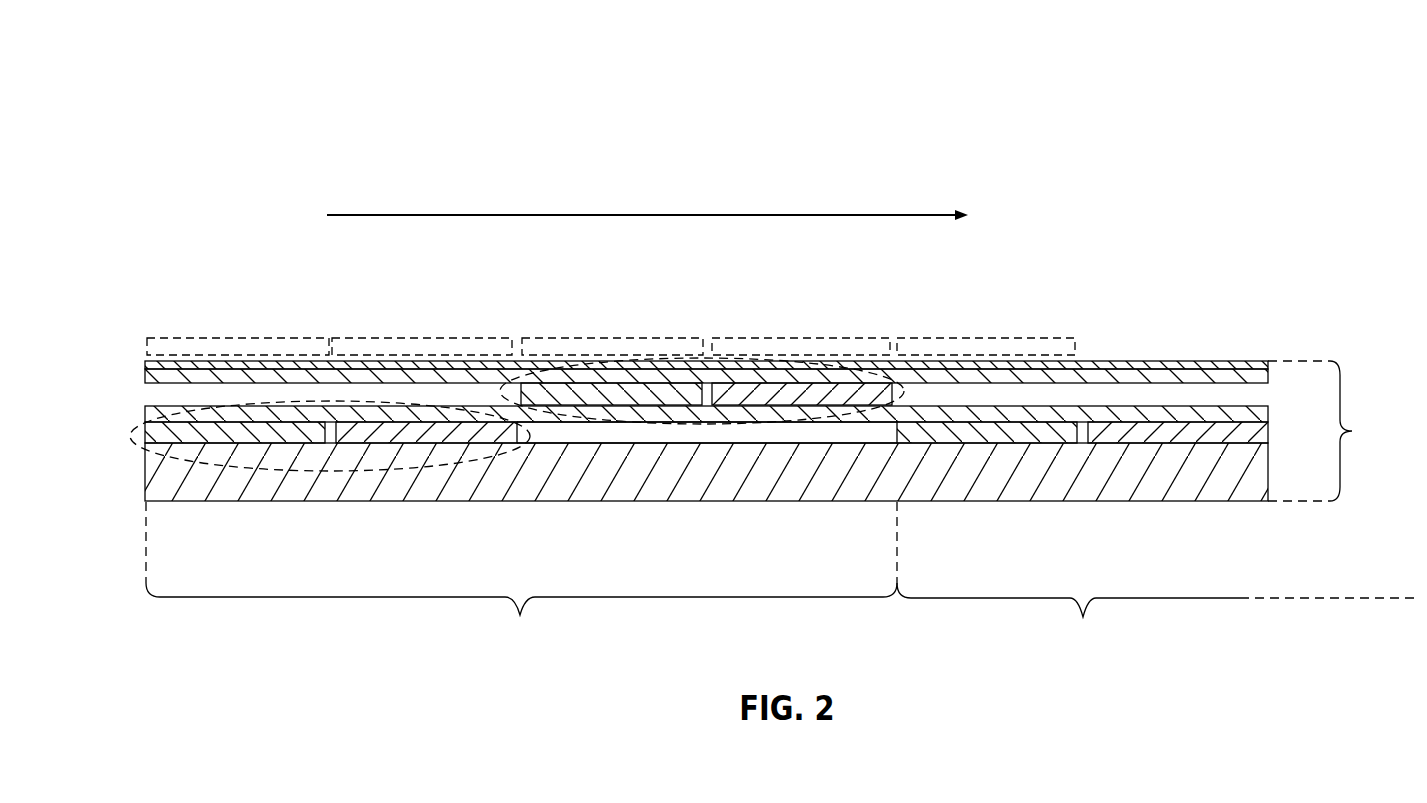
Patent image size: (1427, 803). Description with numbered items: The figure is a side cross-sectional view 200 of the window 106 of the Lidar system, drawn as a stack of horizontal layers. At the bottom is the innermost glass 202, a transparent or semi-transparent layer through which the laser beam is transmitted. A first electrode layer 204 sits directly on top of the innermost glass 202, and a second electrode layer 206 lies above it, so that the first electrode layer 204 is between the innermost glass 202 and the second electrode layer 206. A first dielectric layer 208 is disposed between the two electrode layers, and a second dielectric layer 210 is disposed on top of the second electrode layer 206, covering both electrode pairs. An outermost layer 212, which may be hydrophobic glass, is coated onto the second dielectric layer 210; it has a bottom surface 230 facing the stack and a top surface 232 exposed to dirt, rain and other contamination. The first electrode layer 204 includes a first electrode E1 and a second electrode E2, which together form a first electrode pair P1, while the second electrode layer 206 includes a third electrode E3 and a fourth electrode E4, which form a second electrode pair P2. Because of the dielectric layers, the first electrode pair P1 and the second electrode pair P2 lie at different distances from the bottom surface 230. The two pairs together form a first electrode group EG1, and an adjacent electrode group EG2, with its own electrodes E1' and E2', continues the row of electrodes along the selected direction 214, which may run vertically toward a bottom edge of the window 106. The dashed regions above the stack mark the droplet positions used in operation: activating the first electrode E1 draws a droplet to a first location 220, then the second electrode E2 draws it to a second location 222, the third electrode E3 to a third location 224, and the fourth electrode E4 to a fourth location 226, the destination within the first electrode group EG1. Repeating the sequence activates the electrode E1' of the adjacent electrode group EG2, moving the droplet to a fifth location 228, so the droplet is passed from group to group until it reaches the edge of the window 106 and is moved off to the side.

The side cross-sectional view 200 is at (358, 80).
The window 106 is at (1352, 431).
The innermost glass 202 is at (146, 490).
The first electrode layer 204 is at (146, 434).
The second electrode layer 206 is at (1253, 396).
The first dielectric layer 208 is at (146, 414).
The second dielectric layer 210 is at (146, 378).
The outermost layer 212 is at (147, 365).
The selected direction 214 is at (393, 214).
The first location 220 is at (238, 333).
The second location 222 is at (418, 333).
The third location 224 is at (618, 333).
The fourth location 226 is at (808, 333).
The fifth location 228 is at (996, 333).
The bottom surface 230 is at (1230, 371).
The top surface 232 is at (1150, 362).
The first electrode E1 is at (235, 498).
The second electrode E2 is at (426, 491).
The third electrode E3 is at (568, 395).
The fourth electrode E4 is at (863, 390).
The first electrode of adjacent electrode group E1' is at (987, 495).
The second electrode of adjacent electrode group E2' is at (1178, 493).
The first electrode pair P1 is at (298, 473).
The second electrode pair P2 is at (730, 357).
The first electrode group EG1 is at (521, 577).
The adjacent electrode group EG2 is at (1158, 617).